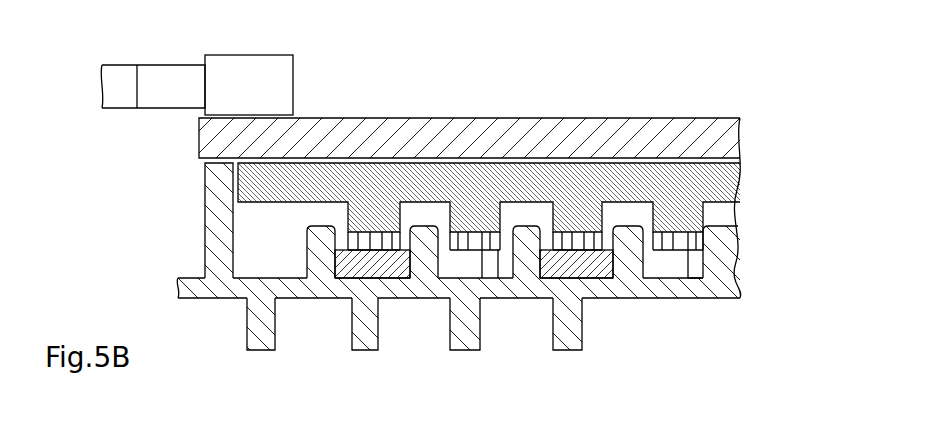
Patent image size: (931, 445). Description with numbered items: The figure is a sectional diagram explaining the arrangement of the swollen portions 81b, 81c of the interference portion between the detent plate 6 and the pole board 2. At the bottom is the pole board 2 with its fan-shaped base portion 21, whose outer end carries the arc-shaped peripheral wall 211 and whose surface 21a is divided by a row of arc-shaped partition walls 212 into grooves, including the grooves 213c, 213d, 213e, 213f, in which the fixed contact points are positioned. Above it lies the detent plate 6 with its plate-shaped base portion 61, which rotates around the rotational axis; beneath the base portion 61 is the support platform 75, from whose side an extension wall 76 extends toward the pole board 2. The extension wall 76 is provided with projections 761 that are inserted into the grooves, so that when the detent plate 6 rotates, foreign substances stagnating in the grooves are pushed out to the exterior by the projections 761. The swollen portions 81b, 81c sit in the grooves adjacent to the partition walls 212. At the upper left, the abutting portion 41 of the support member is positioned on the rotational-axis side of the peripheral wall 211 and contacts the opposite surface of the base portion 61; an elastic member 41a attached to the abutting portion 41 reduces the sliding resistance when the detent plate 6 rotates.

The pole board 2 is at (228, 300).
The detent plate 6 is at (741, 120).
The base portion 21 is at (178, 284).
The surface 21a is at (265, 275).
The abutting portion 41 is at (172, 80).
The elastic member 41a is at (248, 72).
The plate-shaped base portion 61 is at (325, 135).
The support platform 75 is at (440, 160).
The extension wall 76 is at (540, 195).
The swollen portion 81b is at (585, 262).
The swollen portion 81c is at (397, 262).
The peripheral wall 211 is at (205, 190).
The partition wall 212 is at (323, 258).
The groove 213c is at (682, 300).
The groove 213d is at (565, 352).
The groove 213e is at (462, 352).
The groove 213f is at (362, 352).
The projection 761 is at (375, 232).